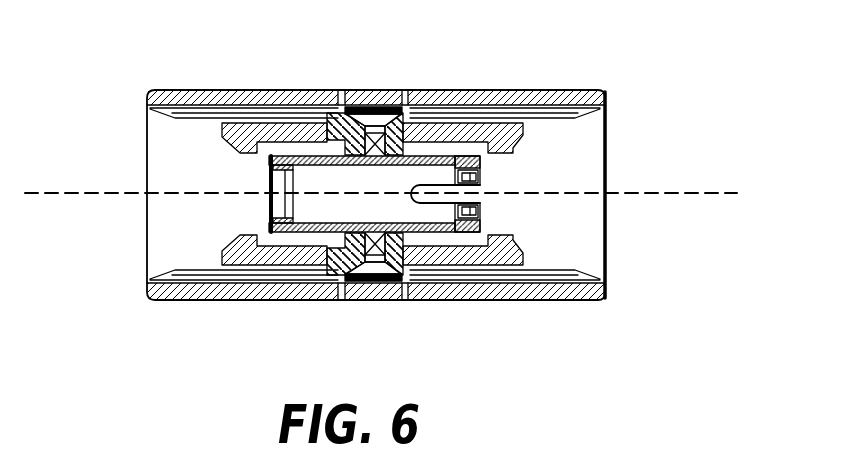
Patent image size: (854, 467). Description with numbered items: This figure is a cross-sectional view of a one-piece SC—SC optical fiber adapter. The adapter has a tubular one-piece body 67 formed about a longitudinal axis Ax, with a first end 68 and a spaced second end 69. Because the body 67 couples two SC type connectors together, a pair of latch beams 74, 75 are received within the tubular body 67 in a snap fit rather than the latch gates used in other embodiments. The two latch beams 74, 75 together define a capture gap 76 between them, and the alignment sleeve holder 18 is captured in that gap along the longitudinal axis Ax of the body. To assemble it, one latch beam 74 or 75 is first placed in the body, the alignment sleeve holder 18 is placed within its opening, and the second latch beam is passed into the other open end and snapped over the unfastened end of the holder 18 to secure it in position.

The alignment sleeve holder 18 is at (298, 190).
The tubular one-piece body 67 is at (465, 97).
The first end 68 is at (580, 247).
The second end 69 is at (172, 229).
The latch beam 74 is at (225, 128).
The latch beam 75 is at (517, 149).
The capture gap 76 is at (373, 268).
The longitudinal axis Ax is at (678, 193).